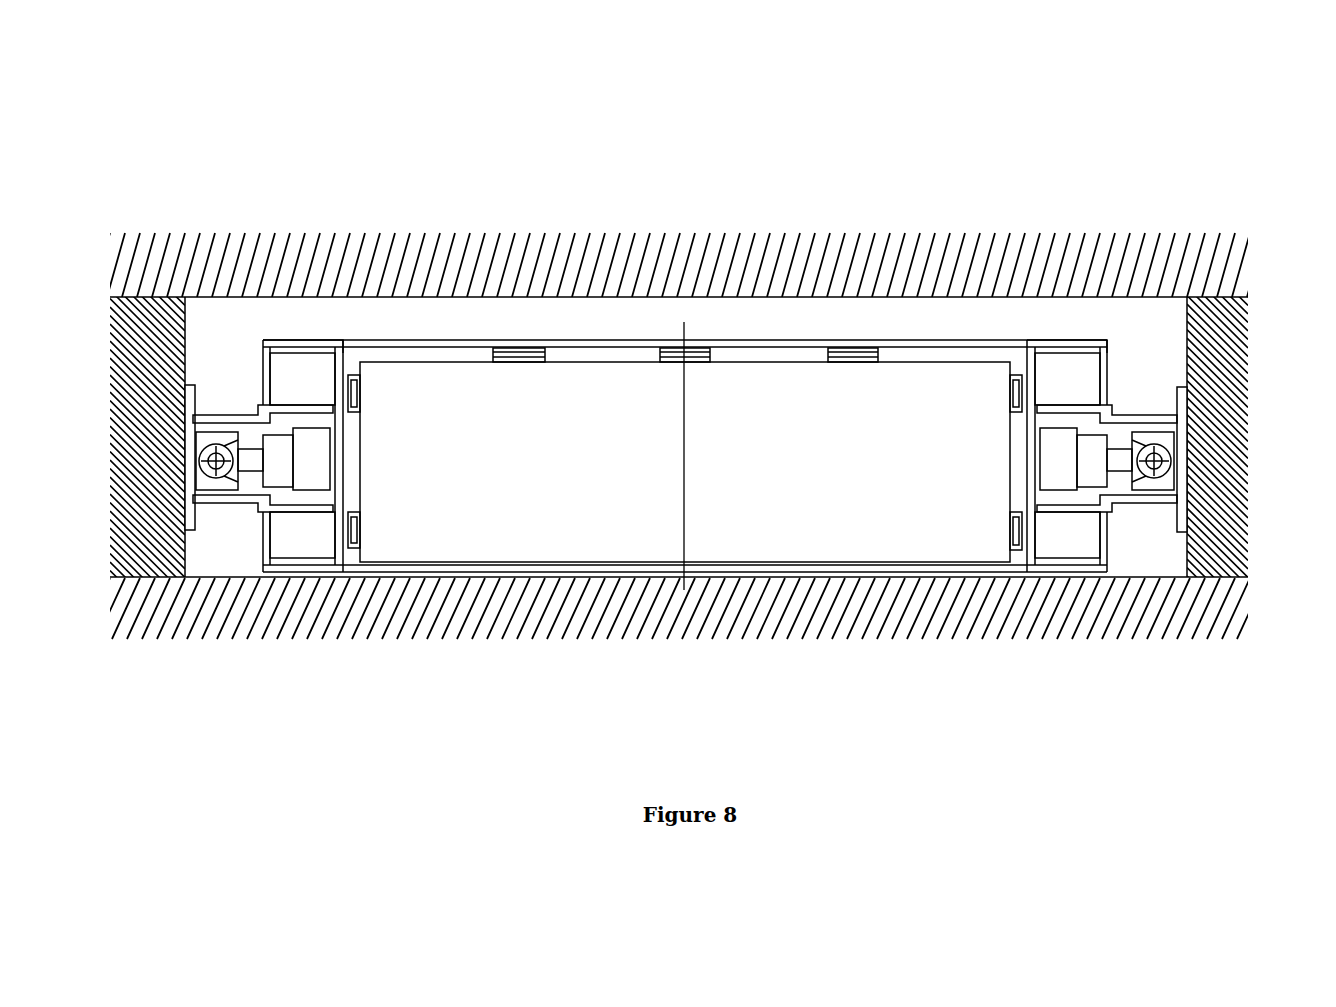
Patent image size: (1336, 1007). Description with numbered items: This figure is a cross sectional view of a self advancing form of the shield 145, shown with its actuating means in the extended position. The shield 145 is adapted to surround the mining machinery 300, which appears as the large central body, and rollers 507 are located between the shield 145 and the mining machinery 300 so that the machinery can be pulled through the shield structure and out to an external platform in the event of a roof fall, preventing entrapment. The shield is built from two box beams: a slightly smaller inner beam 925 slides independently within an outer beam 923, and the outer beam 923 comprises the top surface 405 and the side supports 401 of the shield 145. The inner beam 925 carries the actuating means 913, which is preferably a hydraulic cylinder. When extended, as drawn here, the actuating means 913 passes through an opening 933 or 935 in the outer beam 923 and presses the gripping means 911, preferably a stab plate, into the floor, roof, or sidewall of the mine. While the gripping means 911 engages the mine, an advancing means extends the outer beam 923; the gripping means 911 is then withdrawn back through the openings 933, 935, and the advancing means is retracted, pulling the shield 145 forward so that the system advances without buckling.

The shield 145 is at (758, 322).
The mining machinery 300 is at (610, 532).
The side supports 401 is at (335, 540).
The top surface 405 is at (605, 342).
The rollers 507 is at (493, 350).
The gripping means 911 is at (183, 487).
The actuating means 913 is at (278, 452).
The outer beam 923 is at (262, 345).
The inner beam 925 is at (277, 352).
The opening 933 is at (1124, 512).
The opening 935 is at (253, 522).